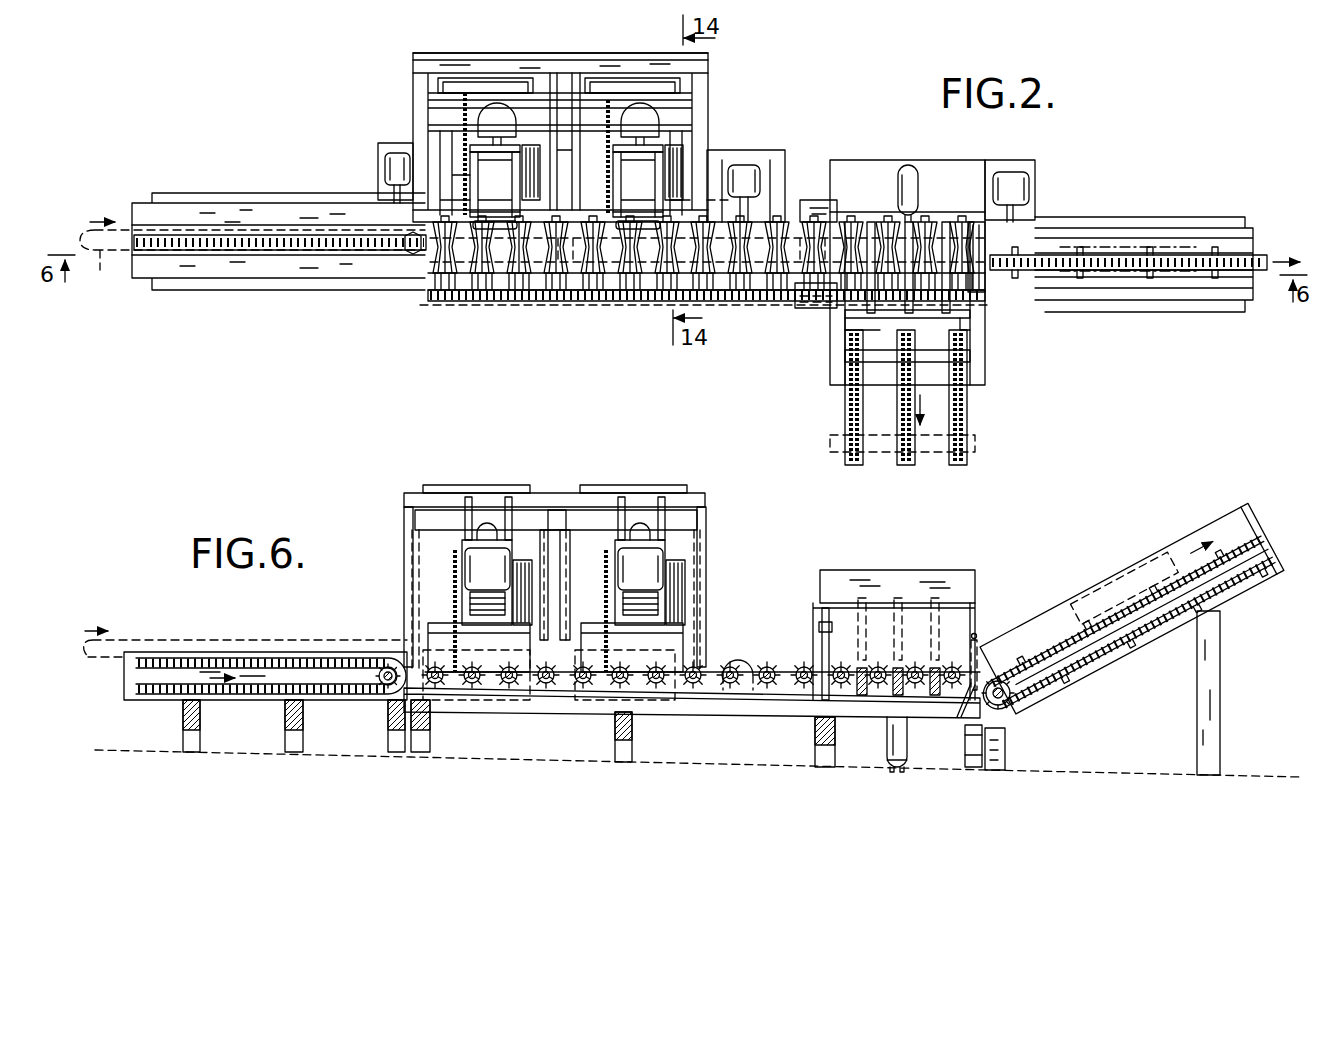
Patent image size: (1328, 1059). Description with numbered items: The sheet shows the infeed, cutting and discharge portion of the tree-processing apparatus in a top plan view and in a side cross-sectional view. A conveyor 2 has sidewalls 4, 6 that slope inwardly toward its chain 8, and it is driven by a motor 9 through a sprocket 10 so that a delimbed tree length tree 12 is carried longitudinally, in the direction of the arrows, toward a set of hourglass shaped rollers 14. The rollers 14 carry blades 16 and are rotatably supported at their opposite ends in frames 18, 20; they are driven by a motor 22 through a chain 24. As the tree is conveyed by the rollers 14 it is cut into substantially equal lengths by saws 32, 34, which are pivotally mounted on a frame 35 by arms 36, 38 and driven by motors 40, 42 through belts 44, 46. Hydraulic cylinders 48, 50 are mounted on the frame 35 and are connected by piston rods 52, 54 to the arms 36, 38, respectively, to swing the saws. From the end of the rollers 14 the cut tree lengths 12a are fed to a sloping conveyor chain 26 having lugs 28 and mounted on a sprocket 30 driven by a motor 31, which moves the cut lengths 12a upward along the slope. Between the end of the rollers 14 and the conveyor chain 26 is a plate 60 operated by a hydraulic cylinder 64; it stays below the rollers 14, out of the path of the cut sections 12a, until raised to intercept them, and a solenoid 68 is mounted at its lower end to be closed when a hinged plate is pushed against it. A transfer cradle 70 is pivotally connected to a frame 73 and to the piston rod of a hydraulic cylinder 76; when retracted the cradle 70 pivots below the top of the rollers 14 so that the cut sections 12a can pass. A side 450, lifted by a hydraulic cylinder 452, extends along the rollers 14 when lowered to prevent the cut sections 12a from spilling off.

In FIG. 2, the conveyor 2 is at (233, 196).
In FIG. 6, the conveyor 2 is at (120, 716).
In FIG. 2, the sidewall 4 is at (167, 216).
In FIG. 6, the sidewall 4 is at (130, 672).
In FIG. 2, the sidewall 6 is at (170, 264).
In FIG. 2, the chain 8 is at (277, 252).
In FIG. 2, the motor 9 is at (400, 152).
In FIG. 2, the sprocket 10 is at (394, 256).
In FIG. 6, the sprocket 10 is at (387, 672).
In FIG. 2, the delimbed tree length tree 12 is at (252, 262).
In FIG. 6, the delimbed tree length tree 12 is at (137, 640).
In FIG. 2, the cut tree lengths 12a is at (1125, 270).
In FIG. 6, the cut tree lengths 12a is at (1126, 575).
In FIG. 2, the hourglass shaped rollers 14 is at (487, 268).
In FIG. 6, the hourglass shaped rollers 14 is at (505, 684).
In FIG. 6, the blades 16 is at (512, 686).
In FIG. 2, the frame 18 is at (812, 208).
In FIG. 2, the frame 20 is at (803, 304).
In FIG. 2, the motor 22 is at (765, 180).
In FIG. 6, the motor 22 is at (740, 659).
In FIG. 2, the chain 24 is at (562, 292).
In FIG. 2, the sloping conveyor chain 26 is at (1170, 252).
In FIG. 6, the sloping conveyor chain 26 is at (1083, 668).
In FIG. 2, the lugs 28 is at (1128, 262).
In FIG. 6, the lugs 28 is at (1120, 656).
In FIG. 6, the sprocket 30 is at (1004, 702).
In FIG. 2, the motor 31 is at (1018, 192).
In FIG. 2, the saw 32 is at (462, 138).
In FIG. 2, the saw 34 is at (597, 158).
In FIG. 6, the saw 34 is at (608, 582).
In FIG. 2, the frame 35 is at (641, 63).
In FIG. 2, the arm 36 is at (470, 164).
In FIG. 2, the arm 38 is at (623, 205).
In FIG. 2, the motor 40 is at (515, 218).
In FIG. 6, the motor 40 is at (465, 568).
In FIG. 2, the motor 42 is at (652, 226).
In FIG. 6, the motor 42 is at (648, 556).
In FIG. 2, the belt 44 is at (528, 176).
In FIG. 6, the belt 44 is at (520, 598).
In FIG. 2, the belt 46 is at (671, 176).
In FIG. 6, the belt 46 is at (683, 592).
In FIG. 2, the hydraulic cylinder 48 is at (632, 137).
In FIG. 6, the hydraulic cylinder 48 is at (636, 528).
In FIG. 2, the hydraulic cylinder 50 is at (494, 128).
In FIG. 6, the hydraulic cylinder 50 is at (490, 528).
In FIG. 2, the piston rod 52 is at (614, 156).
In FIG. 2, the piston rod 54 is at (515, 142).
In FIG. 2, the plate 60 is at (980, 284).
In FIG. 6, the plate 60 is at (978, 688).
In FIG. 6, the hydraulic cylinder 64 is at (973, 764).
In FIG. 6, the solenoid 68 is at (967, 728).
In FIG. 2, the transfer cradle 70 is at (944, 222).
In FIG. 6, the transfer cradle 70 is at (905, 673).
In FIG. 2, the frame 73 is at (985, 356).
In FIG. 2, the hydraulic cylinder 76 is at (900, 193).
In FIG. 6, the hydraulic cylinder 76 is at (889, 742).
In FIG. 6, the side 450 is at (922, 578).
In FIG. 6, the hydraulic cylinder 452 is at (822, 645).